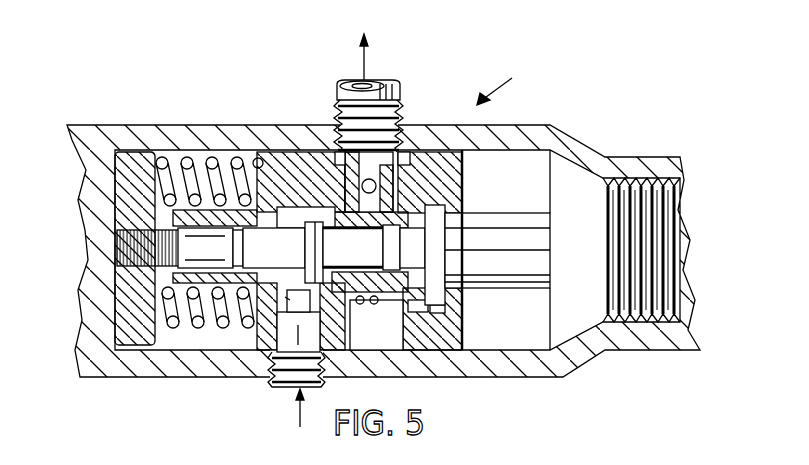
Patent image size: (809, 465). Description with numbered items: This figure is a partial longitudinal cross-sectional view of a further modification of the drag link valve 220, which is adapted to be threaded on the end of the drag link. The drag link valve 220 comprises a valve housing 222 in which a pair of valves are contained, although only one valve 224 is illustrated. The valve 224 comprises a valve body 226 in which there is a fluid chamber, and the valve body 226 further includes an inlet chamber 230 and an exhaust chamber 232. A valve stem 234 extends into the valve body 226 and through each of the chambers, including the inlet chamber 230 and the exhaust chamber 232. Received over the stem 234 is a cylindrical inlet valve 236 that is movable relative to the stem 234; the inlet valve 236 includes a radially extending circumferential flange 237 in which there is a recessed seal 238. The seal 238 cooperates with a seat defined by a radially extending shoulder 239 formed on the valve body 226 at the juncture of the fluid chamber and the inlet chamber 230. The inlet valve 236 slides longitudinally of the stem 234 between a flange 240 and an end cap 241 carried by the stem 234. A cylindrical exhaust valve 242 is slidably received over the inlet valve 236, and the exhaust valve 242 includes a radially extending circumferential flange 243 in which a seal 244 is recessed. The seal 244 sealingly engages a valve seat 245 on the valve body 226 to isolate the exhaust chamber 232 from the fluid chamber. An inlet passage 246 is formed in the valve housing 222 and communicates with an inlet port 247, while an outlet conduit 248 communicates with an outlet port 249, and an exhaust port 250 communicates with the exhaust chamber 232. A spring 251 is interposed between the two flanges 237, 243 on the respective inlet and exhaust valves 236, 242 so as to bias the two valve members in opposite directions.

The drag link valve 220 is at (516, 84).
The valve housing 222 is at (518, 137).
The valve 224 is at (408, 147).
The valve body 226 is at (300, 143).
The inlet chamber 230 is at (306, 219).
The exhaust chamber 232 is at (470, 262).
The valve stem 234 is at (118, 244).
The cylindrical inlet valve 236 is at (374, 247).
The circumferential flange 237 is at (345, 186).
The recessed seal 238 is at (345, 315).
The radially extending shoulder 239 is at (330, 322).
The flange 240 is at (305, 250).
The end cap 241 is at (440, 290).
The cylindrical exhaust valve 242 is at (440, 212).
The circumferential flange 243 is at (440, 330).
The seal 244 is at (440, 197).
The valve seat 245 is at (445, 318).
The inlet passage 246 is at (290, 385).
The inlet port 247 is at (285, 297).
The outlet conduit 248 is at (345, 92).
The outlet port 249 is at (350, 140).
The exhaust port 250 is at (525, 216).
The spring 251 is at (338, 160).